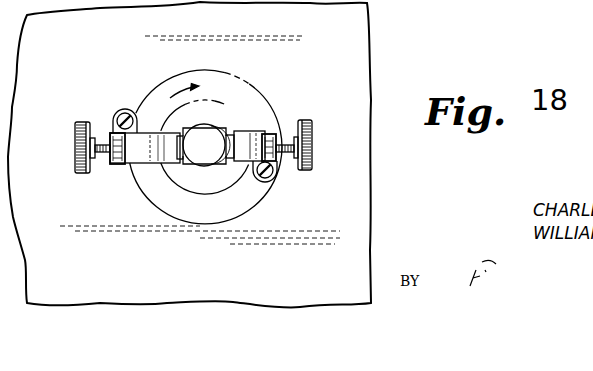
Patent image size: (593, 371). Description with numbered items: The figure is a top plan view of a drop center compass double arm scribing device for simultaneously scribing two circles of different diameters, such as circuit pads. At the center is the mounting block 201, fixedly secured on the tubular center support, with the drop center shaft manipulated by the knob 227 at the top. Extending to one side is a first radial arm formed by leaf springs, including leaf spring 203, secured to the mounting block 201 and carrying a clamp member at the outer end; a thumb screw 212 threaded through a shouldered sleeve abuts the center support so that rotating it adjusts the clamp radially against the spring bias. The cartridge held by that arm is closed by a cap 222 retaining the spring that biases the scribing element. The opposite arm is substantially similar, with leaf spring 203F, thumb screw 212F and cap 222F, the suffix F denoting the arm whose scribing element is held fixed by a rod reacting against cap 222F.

The mounting block 201 is at (225, 128).
The leaf spring 203 is at (141, 156).
The leaf spring 203F is at (258, 132).
The thumb screw 212 is at (77, 136).
The thumb screw 212F is at (310, 138).
The cap 222 is at (124, 112).
The cap 222F is at (262, 180).
The knob 227 is at (207, 156).